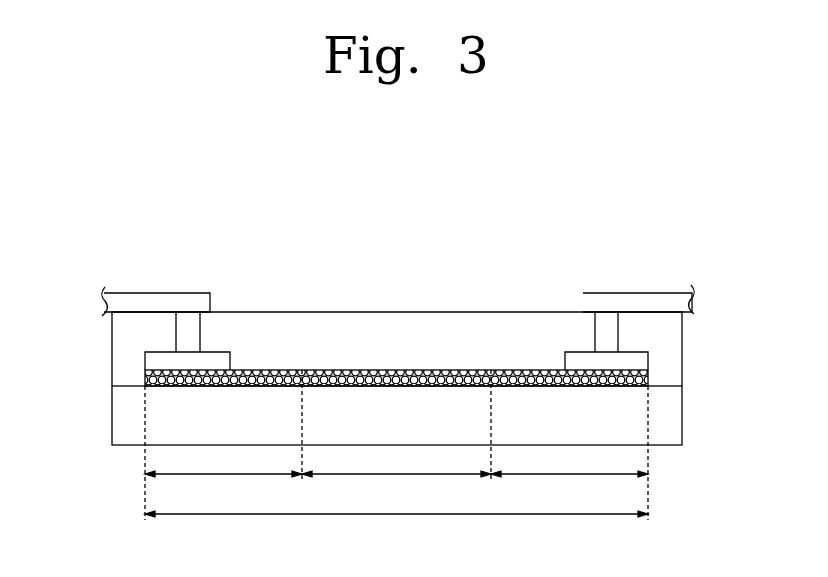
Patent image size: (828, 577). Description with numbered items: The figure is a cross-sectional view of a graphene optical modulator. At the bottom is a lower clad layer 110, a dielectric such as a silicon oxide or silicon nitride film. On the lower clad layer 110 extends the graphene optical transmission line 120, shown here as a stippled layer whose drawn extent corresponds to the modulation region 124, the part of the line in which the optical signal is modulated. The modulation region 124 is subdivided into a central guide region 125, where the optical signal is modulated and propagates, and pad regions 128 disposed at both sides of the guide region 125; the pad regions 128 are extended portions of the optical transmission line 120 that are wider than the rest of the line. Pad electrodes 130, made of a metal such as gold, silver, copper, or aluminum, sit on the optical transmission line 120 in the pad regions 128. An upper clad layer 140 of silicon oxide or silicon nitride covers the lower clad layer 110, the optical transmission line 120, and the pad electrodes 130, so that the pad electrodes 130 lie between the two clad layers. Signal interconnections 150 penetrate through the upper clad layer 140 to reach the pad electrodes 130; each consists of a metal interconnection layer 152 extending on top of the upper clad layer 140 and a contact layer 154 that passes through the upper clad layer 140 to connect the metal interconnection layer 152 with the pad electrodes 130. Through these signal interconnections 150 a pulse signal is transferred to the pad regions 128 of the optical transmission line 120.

The lower clad layer 110 is at (671, 413).
The graphene optical transmission line 120 is at (640, 377).
The modulation region 124 is at (396, 528).
The guide region 125 is at (398, 495).
The pad regions 128 is at (396, 445).
The pad electrodes 130 is at (155, 361).
The upper clad layer 140 is at (671, 343).
The signal interconnections 150 is at (398, 268).
The metal interconnection layer 152 is at (134, 304).
The contact layer 154 is at (393, 288).